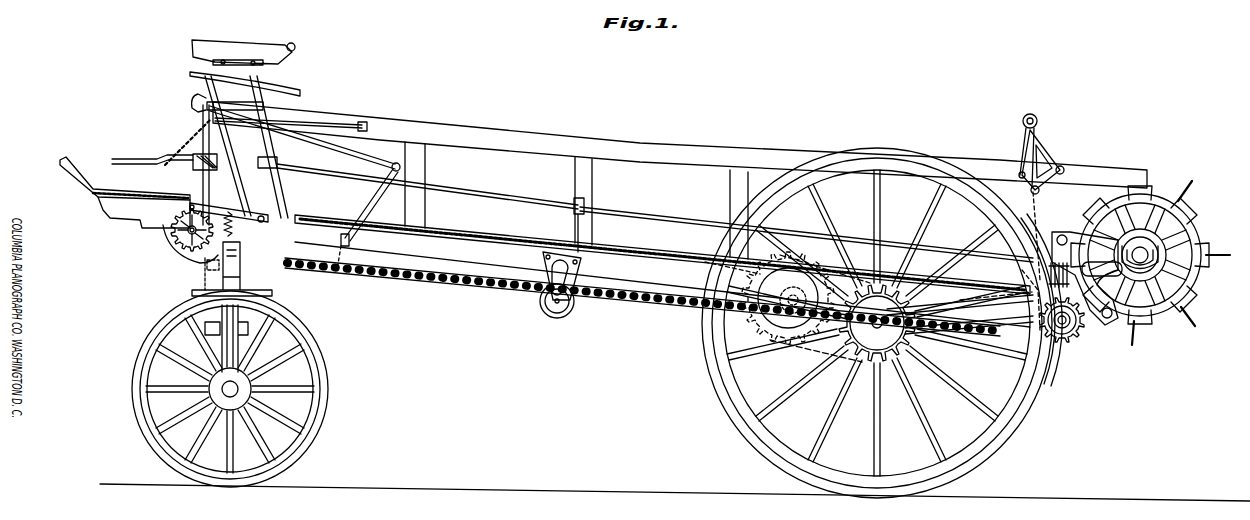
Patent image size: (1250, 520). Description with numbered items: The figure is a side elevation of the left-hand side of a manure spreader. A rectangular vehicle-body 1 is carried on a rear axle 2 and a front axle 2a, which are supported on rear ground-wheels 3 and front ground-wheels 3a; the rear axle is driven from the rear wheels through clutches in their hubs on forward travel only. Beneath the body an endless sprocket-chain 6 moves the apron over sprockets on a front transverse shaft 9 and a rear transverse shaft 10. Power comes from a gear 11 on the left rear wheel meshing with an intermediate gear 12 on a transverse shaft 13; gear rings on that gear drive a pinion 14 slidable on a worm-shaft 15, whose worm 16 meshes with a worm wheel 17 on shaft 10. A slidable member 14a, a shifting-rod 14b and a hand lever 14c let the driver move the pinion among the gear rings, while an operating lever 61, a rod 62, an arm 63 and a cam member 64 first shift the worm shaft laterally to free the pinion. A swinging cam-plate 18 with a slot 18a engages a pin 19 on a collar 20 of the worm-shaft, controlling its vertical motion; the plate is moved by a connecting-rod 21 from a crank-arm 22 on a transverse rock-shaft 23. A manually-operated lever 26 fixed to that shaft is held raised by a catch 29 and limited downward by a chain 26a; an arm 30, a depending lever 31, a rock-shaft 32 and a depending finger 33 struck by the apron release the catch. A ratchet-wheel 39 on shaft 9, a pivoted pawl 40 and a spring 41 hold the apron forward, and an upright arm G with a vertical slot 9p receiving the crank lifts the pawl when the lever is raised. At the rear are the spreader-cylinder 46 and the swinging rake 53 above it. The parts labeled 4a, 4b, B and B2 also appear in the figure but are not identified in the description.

The vehicle-body 1 is at (603, 140).
The rear axle 2 is at (877, 323).
The front axle 2a is at (230, 390).
The rear ground-wheels 3 is at (722, 385).
The front ground-wheels 3a is at (166, 392).
The guide roller 4a is at (557, 318).
The roller hanger bracket 4b is at (551, 295).
The endless sprocket-chain 6 is at (445, 280).
The front transverse shaft 9 is at (186, 250).
The vertical slot 9p is at (168, 158).
The rear transverse shaft 10 is at (1064, 330).
The gear 11 is at (862, 372).
The intermediate gear 12 is at (780, 330).
The transverse shaft 13 is at (760, 310).
The pinion 14 is at (840, 288).
The slidable member 14a is at (938, 284).
The shifting-rod 14b is at (648, 250).
The hand lever 14c is at (205, 78).
The worm-shaft 15 is at (968, 312).
The worm 16 is at (1062, 235).
The worm wheel 17 is at (1082, 332).
The swinging cam-plate 18 is at (998, 304).
The slot 18a is at (1030, 300).
The pin 19 is at (1031, 236).
The collar 20 is at (1048, 370).
The connecting-rod 21 is at (667, 216).
The crank-arm 22 is at (214, 120).
The transverse rock-shaft 23 is at (270, 138).
The manually-operated lever 26 is at (130, 160).
The chain 26a is at (207, 105).
The catch 29 is at (195, 98).
The arm 30 is at (315, 141).
The depending lever 31 is at (368, 200).
The horizontal transverse rock-shaft 32 is at (349, 242).
The depending finger 33 is at (337, 270).
The ratchet-wheel 39 is at (172, 236).
The pivoted pawl 40 is at (245, 218).
The spring 41 is at (205, 272).
The spreader-cylinder 46 is at (1172, 205).
The swinging rake 53 is at (1040, 145).
The operating lever 61 is at (300, 93).
The rod 62 is at (412, 186).
The arm 63 is at (722, 294).
The cam member 64 is at (793, 287).
The seat B is at (226, 84).
The seat bracket B2 is at (293, 44).
The upright arm G is at (203, 192).